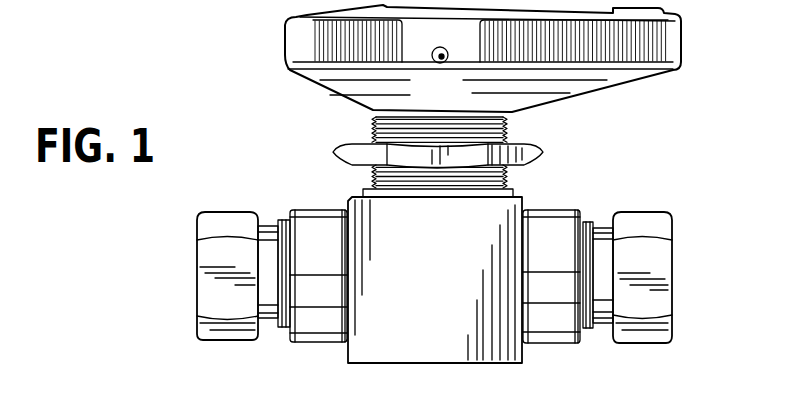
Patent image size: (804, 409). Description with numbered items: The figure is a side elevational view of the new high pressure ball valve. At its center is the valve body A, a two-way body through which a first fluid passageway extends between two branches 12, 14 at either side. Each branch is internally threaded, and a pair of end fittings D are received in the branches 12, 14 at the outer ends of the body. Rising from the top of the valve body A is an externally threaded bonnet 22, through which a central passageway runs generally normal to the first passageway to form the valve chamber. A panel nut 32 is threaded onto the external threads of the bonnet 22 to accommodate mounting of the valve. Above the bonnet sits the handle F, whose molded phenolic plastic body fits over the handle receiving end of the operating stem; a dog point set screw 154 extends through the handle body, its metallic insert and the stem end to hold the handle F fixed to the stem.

The dog point set screw 154 is at (435, 63).
The handle F is at (627, 91).
The panel nut 32 is at (525, 143).
The externally threaded bonnet 22 is at (440, 190).
The valve body A is at (416, 334).
The branch 12 is at (312, 316).
The branch 14 is at (559, 314).
The end fittings D is at (236, 202).